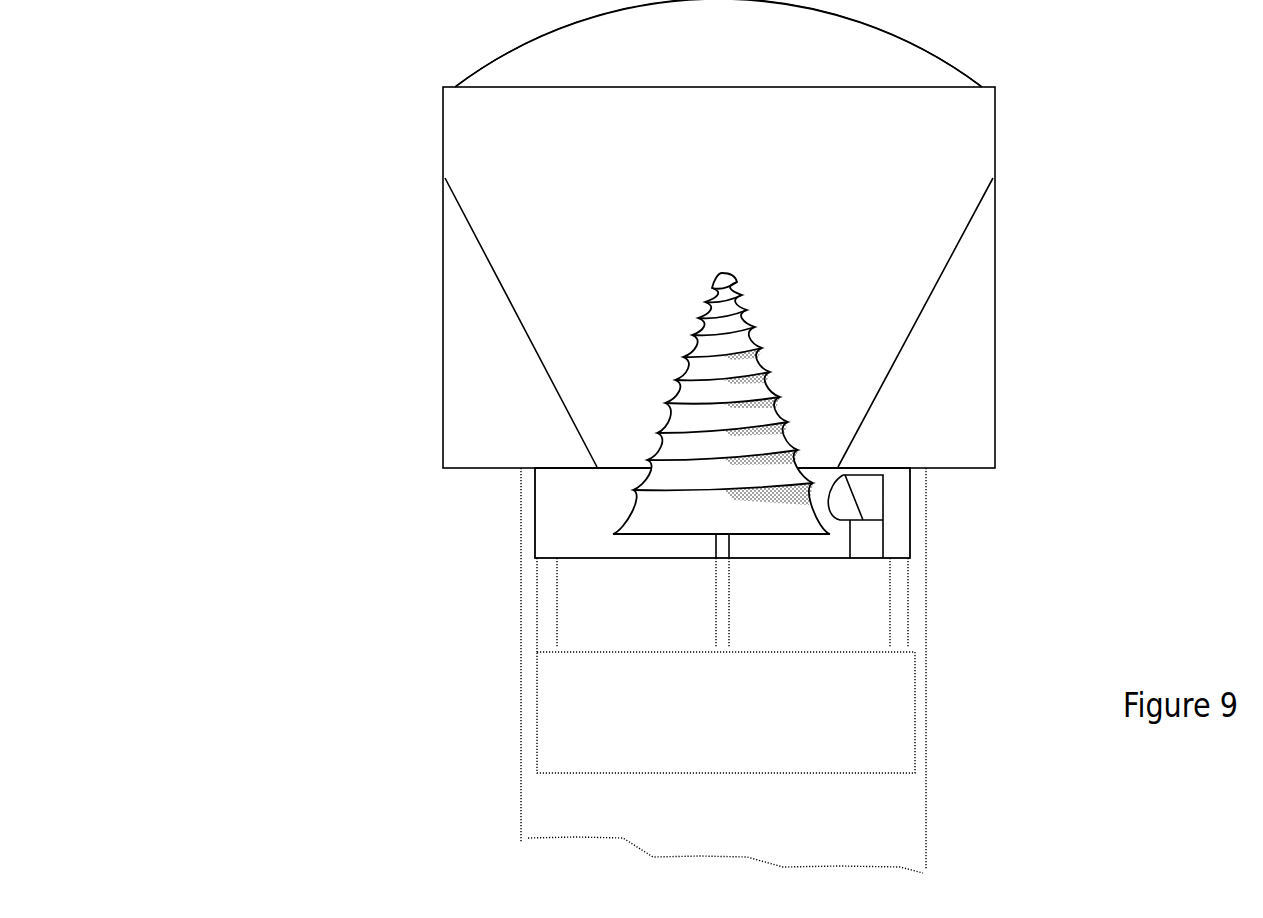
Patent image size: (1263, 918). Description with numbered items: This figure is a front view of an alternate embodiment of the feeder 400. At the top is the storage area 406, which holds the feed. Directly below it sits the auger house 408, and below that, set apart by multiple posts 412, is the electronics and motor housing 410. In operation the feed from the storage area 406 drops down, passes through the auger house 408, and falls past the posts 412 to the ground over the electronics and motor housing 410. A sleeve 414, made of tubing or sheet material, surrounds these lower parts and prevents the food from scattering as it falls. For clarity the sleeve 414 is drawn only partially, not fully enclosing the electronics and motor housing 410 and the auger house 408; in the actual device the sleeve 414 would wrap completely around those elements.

The feeder 400 is at (323, 298).
The storage area 406 is at (719, 234).
The auger house 408 is at (563, 513).
The electronics and motor housing 410 is at (726, 712).
The posts 412 is at (547, 607).
The sleeve 414 is at (537, 815).